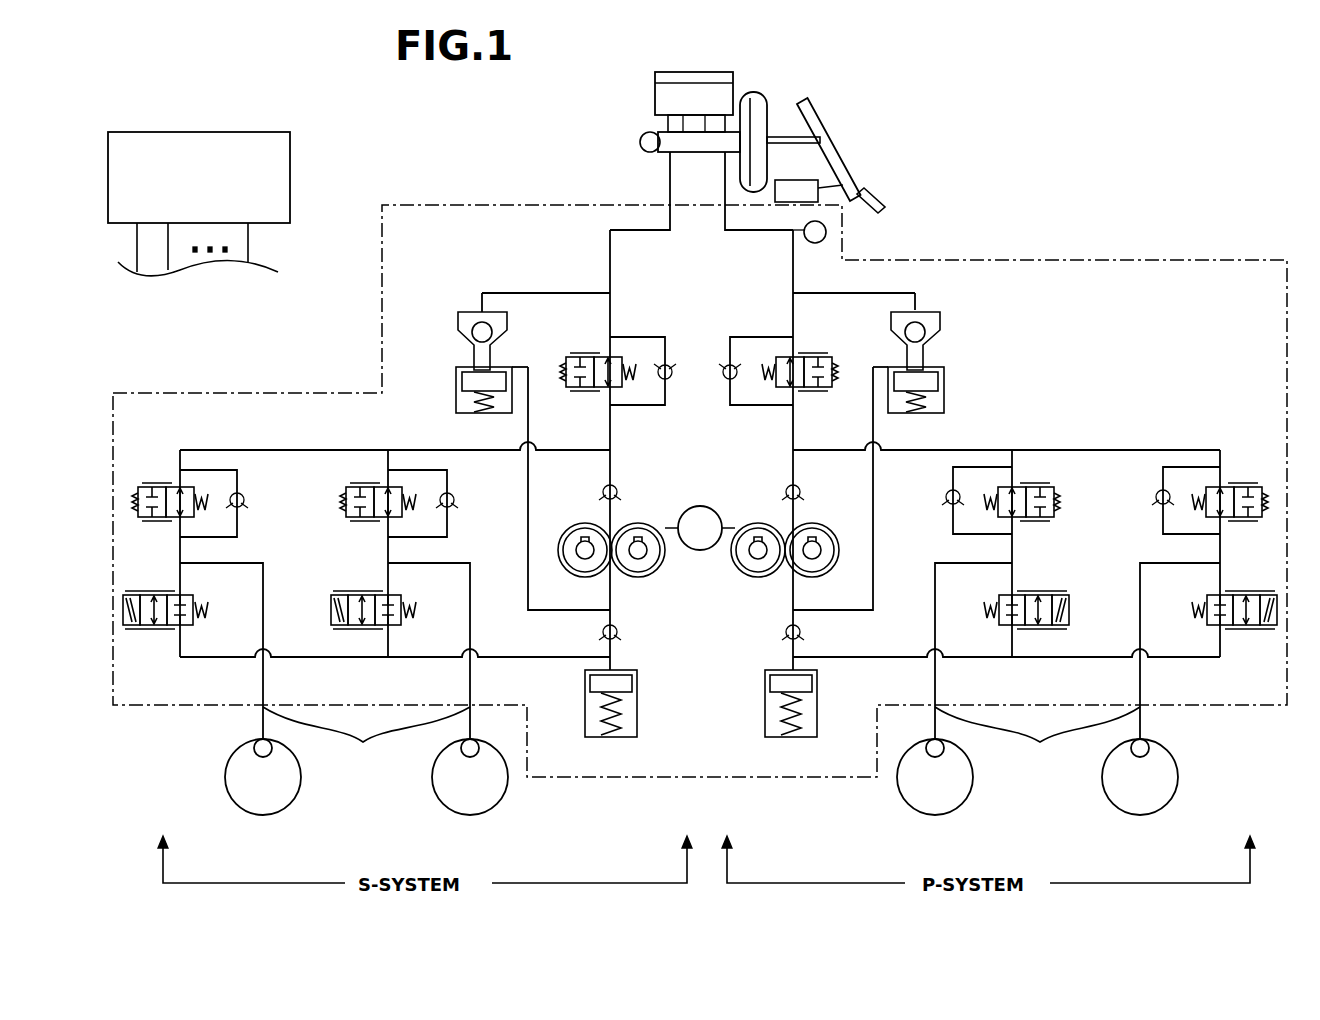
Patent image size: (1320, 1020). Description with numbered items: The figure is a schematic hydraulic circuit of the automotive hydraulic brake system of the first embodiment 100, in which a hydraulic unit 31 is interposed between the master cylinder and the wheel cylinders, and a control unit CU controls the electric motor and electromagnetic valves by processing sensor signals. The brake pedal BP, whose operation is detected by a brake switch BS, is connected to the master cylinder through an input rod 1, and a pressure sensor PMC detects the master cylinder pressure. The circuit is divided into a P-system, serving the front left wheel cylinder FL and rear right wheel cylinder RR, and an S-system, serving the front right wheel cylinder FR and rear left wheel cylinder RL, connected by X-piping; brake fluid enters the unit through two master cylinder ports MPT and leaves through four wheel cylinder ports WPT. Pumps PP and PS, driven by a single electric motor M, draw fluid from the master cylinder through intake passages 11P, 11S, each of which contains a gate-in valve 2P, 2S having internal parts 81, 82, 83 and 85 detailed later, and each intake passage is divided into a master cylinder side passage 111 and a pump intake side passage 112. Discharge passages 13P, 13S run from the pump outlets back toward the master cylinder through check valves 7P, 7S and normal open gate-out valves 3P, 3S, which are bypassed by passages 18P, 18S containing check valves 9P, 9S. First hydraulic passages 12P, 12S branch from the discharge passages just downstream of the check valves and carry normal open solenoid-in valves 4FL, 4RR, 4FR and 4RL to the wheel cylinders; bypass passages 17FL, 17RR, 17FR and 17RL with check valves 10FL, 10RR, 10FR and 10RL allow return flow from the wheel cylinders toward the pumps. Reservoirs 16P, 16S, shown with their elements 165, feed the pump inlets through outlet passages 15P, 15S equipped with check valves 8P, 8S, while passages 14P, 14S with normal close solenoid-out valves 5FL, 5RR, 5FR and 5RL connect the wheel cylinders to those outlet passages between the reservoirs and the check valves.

The input rod 1 is at (787, 136).
The hydraulic brake system of the first embodiment 100 is at (1092, 152).
The hydraulic unit 31 is at (1205, 258).
The control unit CU is at (240, 132).
The brake pedal BP is at (883, 202).
The brake switch BS is at (809, 191).
The master cylinder ports MPT is at (717, 205).
The pressure sensor PMC is at (828, 232).
The master cylinder side passage 111 is at (530, 293).
The pump intake side passage 112 is at (535, 405).
The gate-in valve 2S is at (458, 318).
The gate-in valve 2P is at (942, 320).
The valve ball 81 is at (480, 324).
The valve stem 82 is at (478, 355).
The piston 83 is at (470, 380).
The spring 85 is at (488, 413).
The first hydraulic passage 12S is at (430, 448).
The first hydraulic passage 12P is at (965, 448).
The gate-out valve 3S is at (594, 357).
The gate-out valve 3P is at (806, 357).
The bypass passage 18S is at (636, 335).
The bypass passage 18P is at (752, 335).
The check valve 9S is at (672, 380).
The check valve 9P is at (728, 364).
The discharge passage 13S is at (612, 432).
The discharge passage 13P is at (790, 430).
The check valve 7S is at (620, 490).
The check valve 7P is at (783, 490).
The pump PS is at (566, 528).
The pump PP is at (836, 528).
The electric motor M is at (700, 528).
The outlet passage 15S is at (612, 598).
The outlet passage 15P is at (790, 598).
The check valve 8S is at (600, 632).
The check valve 8P is at (805, 632).
The passage 14S is at (348, 660).
The passage 14P is at (992, 660).
The reservoir 16S is at (622, 672).
The reservoir 16P is at (782, 672).
The reservoir spring 165 is at (630, 718).
The intake passage 11S is at (524, 497).
The intake passage 11P is at (876, 480).
The bypass passage 17RL is at (210, 470).
The bypass passage 17FR is at (410, 470).
The bypass passage 17FL is at (998, 467).
The bypass passage 17RR is at (1190, 467).
The solenoid-in valve 4RL is at (150, 486).
The solenoid-in valve 4FR is at (360, 487).
The solenoid-in valve 4FL is at (1040, 487).
The solenoid-in valve 4RR is at (1248, 486).
The solenoid-out valve 5RL is at (150, 597).
The solenoid-out valve 5FR is at (365, 597).
The solenoid-out valve 5FL is at (1040, 597).
The solenoid-out valve 5RR is at (1248, 597).
The check valve 10RL is at (246, 510).
The check valve 10FR is at (455, 510).
The check valve 10FL is at (946, 508).
The check valve 10RR is at (1153, 508).
The wheel cylinder of rear left road wheel RL is at (263, 796).
The wheel cylinder of front right road wheel FR is at (470, 796).
The wheel cylinder of front left road wheel FL is at (935, 796).
The wheel cylinder of rear right road wheel RR is at (1140, 796).
The wheel cylinder ports WPT is at (701, 741).